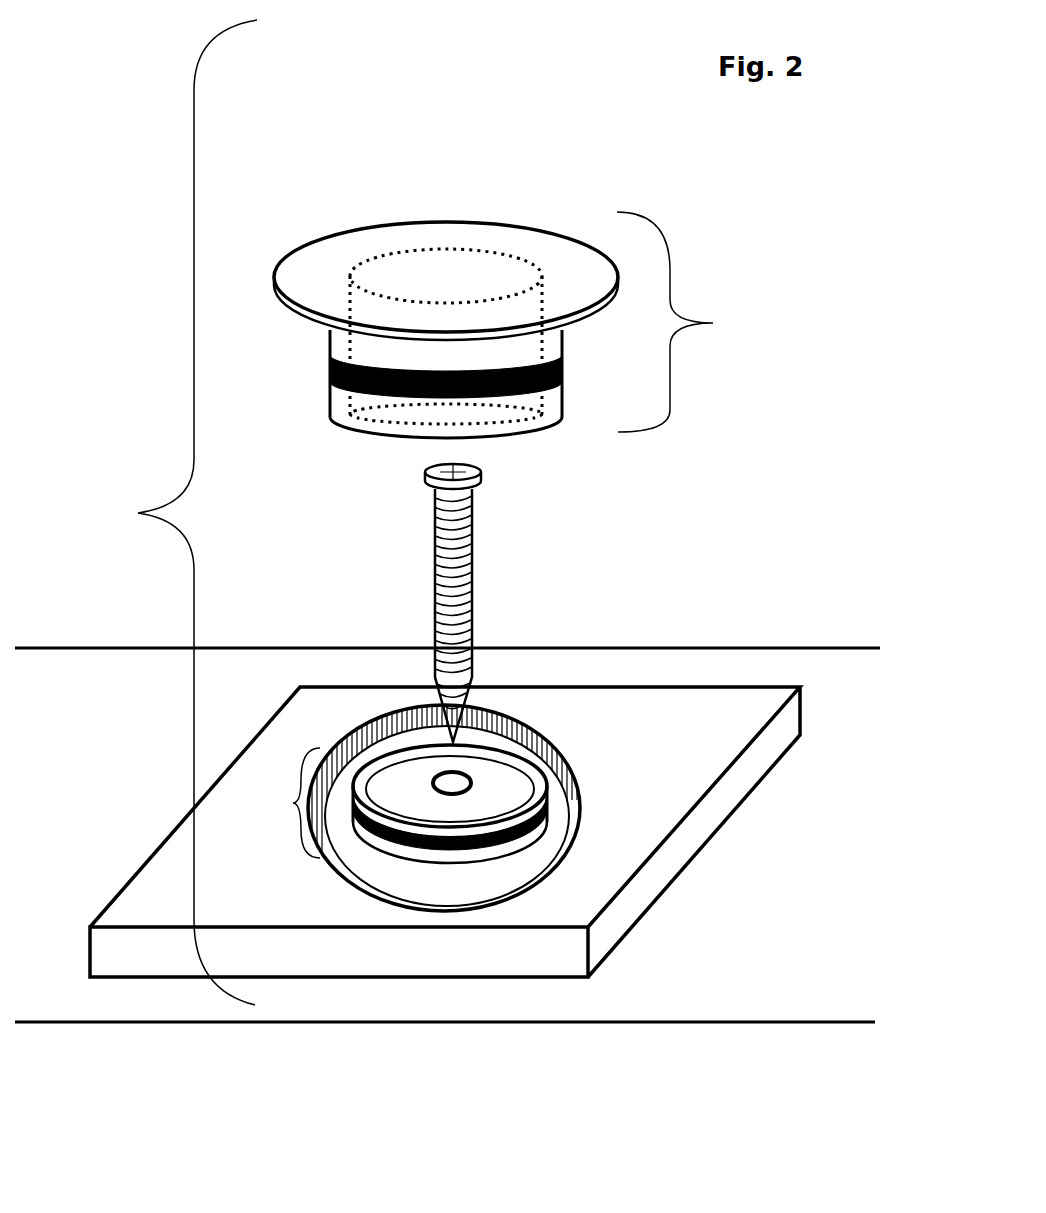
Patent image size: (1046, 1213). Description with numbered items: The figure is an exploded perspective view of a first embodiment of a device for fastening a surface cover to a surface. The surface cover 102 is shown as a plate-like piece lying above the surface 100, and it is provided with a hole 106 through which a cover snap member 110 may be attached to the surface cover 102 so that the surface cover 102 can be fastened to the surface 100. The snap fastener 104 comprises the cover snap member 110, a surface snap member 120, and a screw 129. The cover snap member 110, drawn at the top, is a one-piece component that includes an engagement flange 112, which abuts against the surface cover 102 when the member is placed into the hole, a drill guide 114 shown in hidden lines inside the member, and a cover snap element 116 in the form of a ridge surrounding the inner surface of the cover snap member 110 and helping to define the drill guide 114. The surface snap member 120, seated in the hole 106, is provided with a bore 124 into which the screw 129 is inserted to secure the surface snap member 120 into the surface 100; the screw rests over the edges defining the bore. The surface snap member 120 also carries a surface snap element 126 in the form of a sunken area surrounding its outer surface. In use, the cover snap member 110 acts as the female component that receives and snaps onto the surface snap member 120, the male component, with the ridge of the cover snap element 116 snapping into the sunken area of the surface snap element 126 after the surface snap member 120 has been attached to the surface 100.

The surface 100 is at (703, 963).
The surface cover 102 is at (635, 830).
The snap fastener 104 is at (138, 513).
The hole 106 is at (558, 798).
The cover snap member 110 is at (713, 323).
The engagement flange 112 is at (550, 308).
The drill guide 114 is at (482, 270).
The cover snap element 116 is at (330, 367).
The surface snap member 120 is at (293, 803).
The bore 124 is at (472, 773).
The surface snap element 126 is at (487, 840).
The screw 129 is at (432, 552).